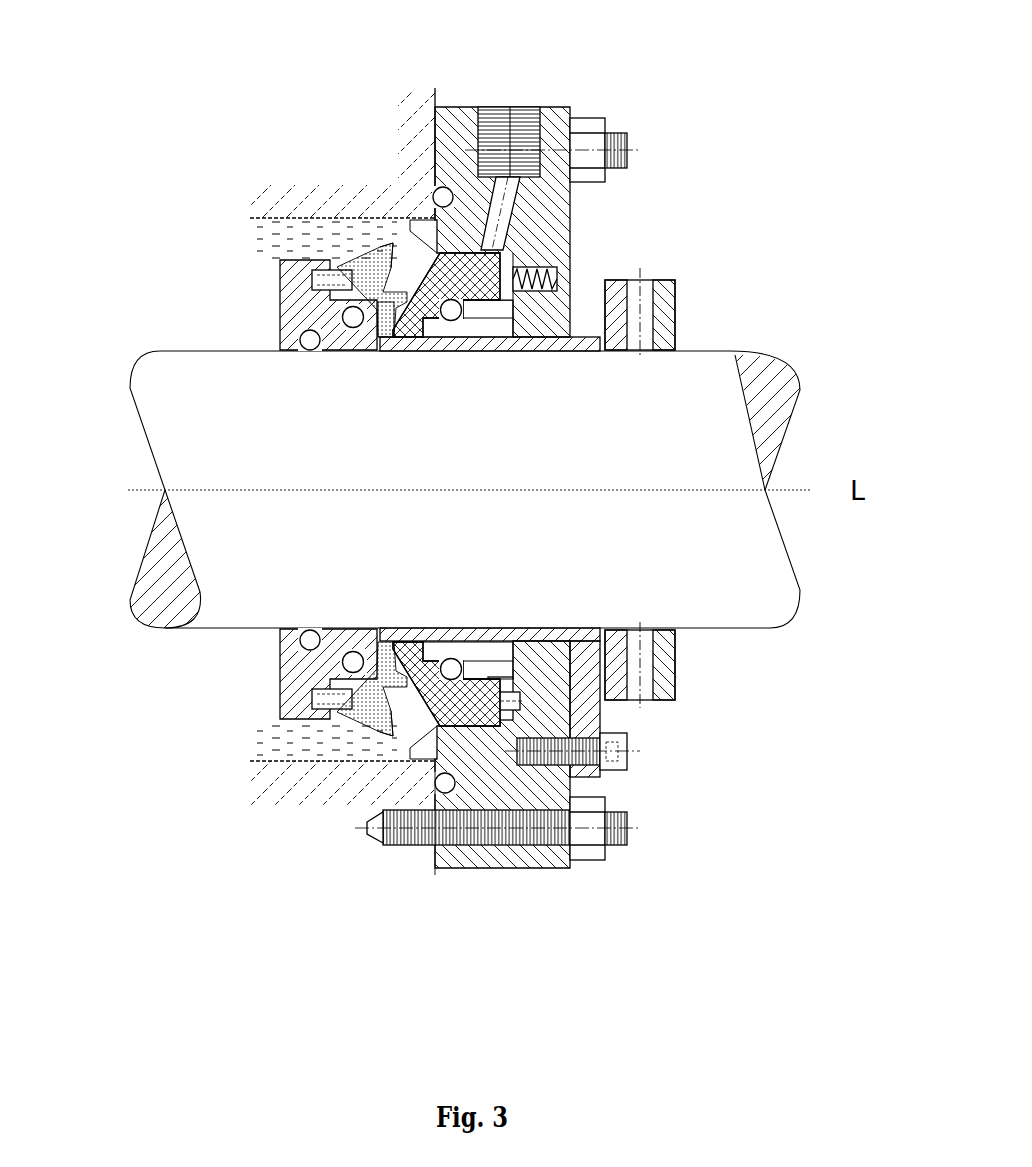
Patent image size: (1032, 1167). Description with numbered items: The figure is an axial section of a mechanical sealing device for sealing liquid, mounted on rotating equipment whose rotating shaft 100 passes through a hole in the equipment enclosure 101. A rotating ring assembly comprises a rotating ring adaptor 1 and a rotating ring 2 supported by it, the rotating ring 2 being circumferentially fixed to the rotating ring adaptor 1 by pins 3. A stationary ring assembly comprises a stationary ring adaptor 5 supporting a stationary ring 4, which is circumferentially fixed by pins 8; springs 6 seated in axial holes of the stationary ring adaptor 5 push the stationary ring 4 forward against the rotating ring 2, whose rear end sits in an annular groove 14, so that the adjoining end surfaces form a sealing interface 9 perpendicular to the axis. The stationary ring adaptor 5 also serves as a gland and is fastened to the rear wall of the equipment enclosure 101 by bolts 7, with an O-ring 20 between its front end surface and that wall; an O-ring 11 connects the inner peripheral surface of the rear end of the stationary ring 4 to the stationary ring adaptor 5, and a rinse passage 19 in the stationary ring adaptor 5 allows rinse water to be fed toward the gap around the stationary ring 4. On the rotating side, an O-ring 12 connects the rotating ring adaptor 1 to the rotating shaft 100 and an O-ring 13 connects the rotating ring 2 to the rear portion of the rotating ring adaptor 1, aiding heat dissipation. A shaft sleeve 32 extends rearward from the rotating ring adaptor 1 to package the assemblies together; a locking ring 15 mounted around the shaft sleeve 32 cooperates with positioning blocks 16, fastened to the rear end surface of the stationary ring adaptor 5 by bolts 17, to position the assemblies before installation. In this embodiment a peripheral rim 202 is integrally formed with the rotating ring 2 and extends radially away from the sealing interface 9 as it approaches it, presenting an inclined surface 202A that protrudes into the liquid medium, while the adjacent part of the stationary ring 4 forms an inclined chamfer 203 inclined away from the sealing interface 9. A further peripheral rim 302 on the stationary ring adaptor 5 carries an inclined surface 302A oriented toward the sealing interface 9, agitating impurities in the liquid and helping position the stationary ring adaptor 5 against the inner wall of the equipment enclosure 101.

The rotating ring adaptor 1 is at (280, 332).
The rotating ring 2 is at (358, 283).
The pins 3 is at (320, 717).
The stationary ring 4 is at (463, 283).
The stationary ring adaptor 5 is at (570, 232).
The springs 6 is at (557, 288).
The bolts 7 is at (630, 165).
The pins 8 is at (623, 767).
The sealing interface 9 is at (390, 327).
The O-ring 11 is at (445, 672).
The O-ring 12 is at (307, 645).
The O-ring 13 is at (365, 748).
The annular groove 14 is at (606, 320).
The locking ring 15 is at (673, 677).
The positioning blocks 16 is at (600, 717).
The bolts 17 is at (577, 793).
The rinse passage 19 is at (517, 203).
The O-ring 20 is at (448, 794).
The shaft sleeve 32 is at (553, 354).
The rotating shaft 100 is at (797, 397).
The equipment enclosure 101 is at (277, 155).
The peripheral rim 202 is at (388, 245).
The inclined surface 202A is at (372, 680).
The inclined chamfer 203 is at (428, 700).
The peripheral rim 302 is at (428, 240).
The inclined surface 302A is at (433, 720).